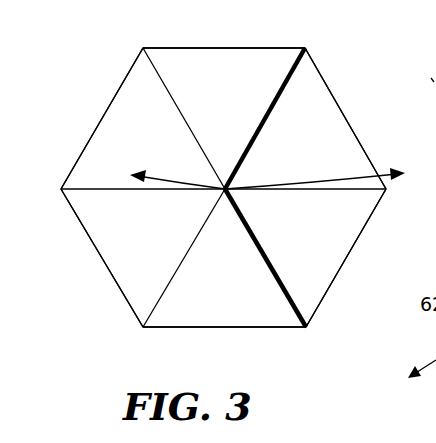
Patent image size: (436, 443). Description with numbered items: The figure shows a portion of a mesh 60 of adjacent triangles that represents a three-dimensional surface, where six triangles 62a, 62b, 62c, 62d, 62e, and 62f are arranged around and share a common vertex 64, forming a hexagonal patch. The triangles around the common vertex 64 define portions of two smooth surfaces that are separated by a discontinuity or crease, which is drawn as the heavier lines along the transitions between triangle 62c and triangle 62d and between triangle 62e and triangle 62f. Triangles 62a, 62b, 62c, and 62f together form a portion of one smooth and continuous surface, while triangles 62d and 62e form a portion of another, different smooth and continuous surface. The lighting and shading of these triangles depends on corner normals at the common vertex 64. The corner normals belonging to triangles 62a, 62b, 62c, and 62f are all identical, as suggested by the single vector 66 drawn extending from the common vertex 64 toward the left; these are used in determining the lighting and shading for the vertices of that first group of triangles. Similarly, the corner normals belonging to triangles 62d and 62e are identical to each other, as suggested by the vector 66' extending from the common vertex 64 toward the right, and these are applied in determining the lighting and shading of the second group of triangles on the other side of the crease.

The mesh 60 is at (106, 330).
The triangle 62a is at (82, 231).
The triangle 62b is at (95, 127).
The triangle 62c is at (192, 47).
The triangle 62d is at (368, 149).
The triangle 62e is at (357, 240).
The triangle 62f is at (272, 328).
The common vertex 64 is at (225, 187).
The vector 66 is at (175, 164).
The vector 66' is at (315, 164).